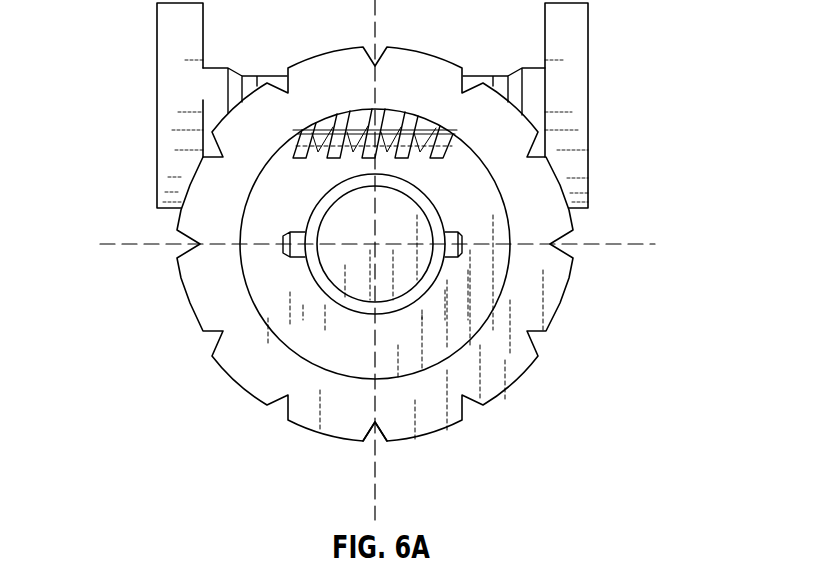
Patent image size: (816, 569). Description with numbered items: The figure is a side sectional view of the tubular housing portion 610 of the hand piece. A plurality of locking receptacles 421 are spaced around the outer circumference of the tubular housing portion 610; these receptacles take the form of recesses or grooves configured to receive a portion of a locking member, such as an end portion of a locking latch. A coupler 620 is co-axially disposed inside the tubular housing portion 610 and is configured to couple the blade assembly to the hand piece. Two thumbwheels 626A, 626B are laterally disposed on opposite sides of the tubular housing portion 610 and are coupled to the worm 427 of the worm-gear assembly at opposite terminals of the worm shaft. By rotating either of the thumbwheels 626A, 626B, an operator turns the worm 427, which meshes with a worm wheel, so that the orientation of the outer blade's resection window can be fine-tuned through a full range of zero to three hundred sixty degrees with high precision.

The tubular housing portion 610 is at (180, 297).
The thumbwheel 626A is at (157, 53).
The thumbwheel 626B is at (588, 83).
The worm 427 is at (403, 118).
The coupler 620 is at (403, 298).
The locking receptacles 421 is at (368, 436).